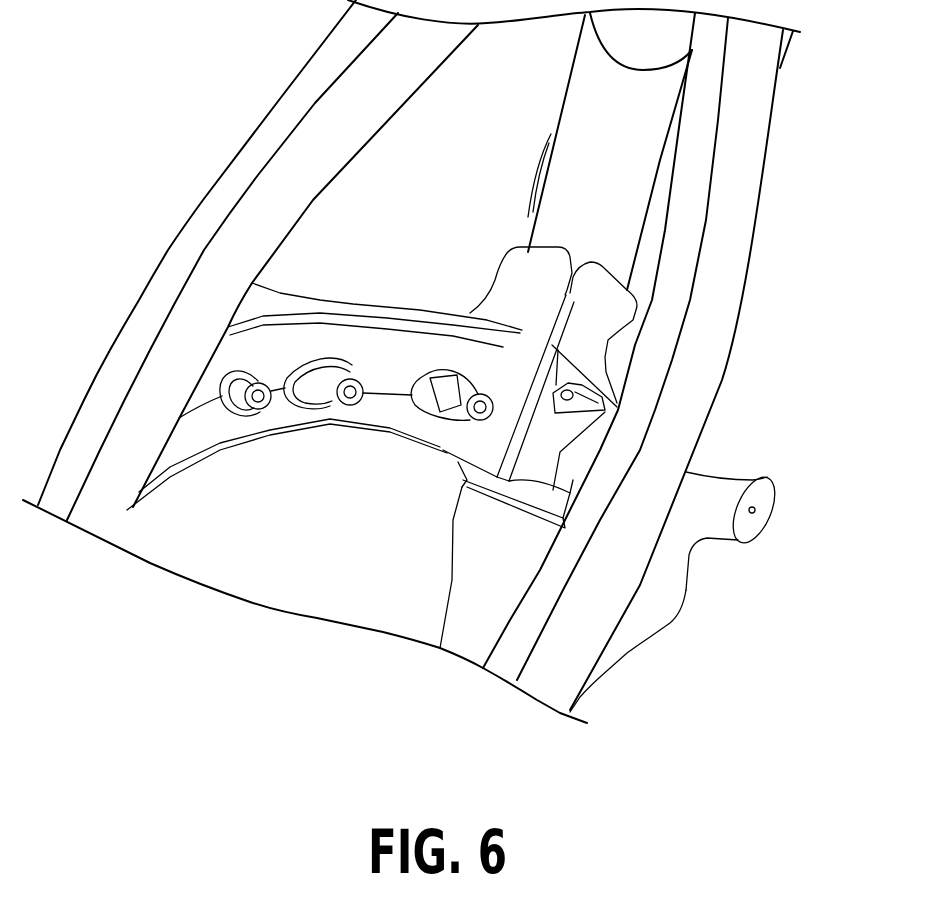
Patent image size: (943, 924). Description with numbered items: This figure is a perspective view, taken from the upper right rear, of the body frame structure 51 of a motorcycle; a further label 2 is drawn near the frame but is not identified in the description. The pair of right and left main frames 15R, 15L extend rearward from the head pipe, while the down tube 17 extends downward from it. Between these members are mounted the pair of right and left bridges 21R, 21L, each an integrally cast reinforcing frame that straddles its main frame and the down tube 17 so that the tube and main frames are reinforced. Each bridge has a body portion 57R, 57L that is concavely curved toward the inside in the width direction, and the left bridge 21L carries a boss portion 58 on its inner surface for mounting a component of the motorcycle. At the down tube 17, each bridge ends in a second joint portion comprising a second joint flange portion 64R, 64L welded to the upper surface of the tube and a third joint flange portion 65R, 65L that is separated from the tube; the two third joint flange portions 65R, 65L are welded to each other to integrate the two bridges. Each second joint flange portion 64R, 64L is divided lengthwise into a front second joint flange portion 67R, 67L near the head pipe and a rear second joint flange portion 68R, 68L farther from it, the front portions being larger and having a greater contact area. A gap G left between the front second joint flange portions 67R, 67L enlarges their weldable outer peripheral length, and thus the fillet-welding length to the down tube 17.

The motorcycle 2 is at (189, 200).
The body frame structure 51 is at (138, 262).
The left main frame 15L is at (308, 60).
The right main frame 15R is at (748, 200).
The down tube 17 is at (577, 97).
The gap G is at (575, 277).
The left bridge 21L is at (316, 300).
The right bridge 21R is at (637, 633).
The body portion 57L is at (369, 303).
The body portion 57R is at (673, 623).
The boss portion 58 is at (250, 410).
The second joint flange portion 64L is at (545, 385).
The second joint flange portion 64R is at (600, 268).
The third joint flange portion 65L is at (503, 373).
The third joint flange portion 65R is at (483, 343).
The front second joint flange portion 67L is at (483, 343).
The front second joint flange portion 67R is at (715, 331).
The rear second joint flange portion 68L is at (480, 493).
The rear second joint flange portion 68R is at (540, 513).